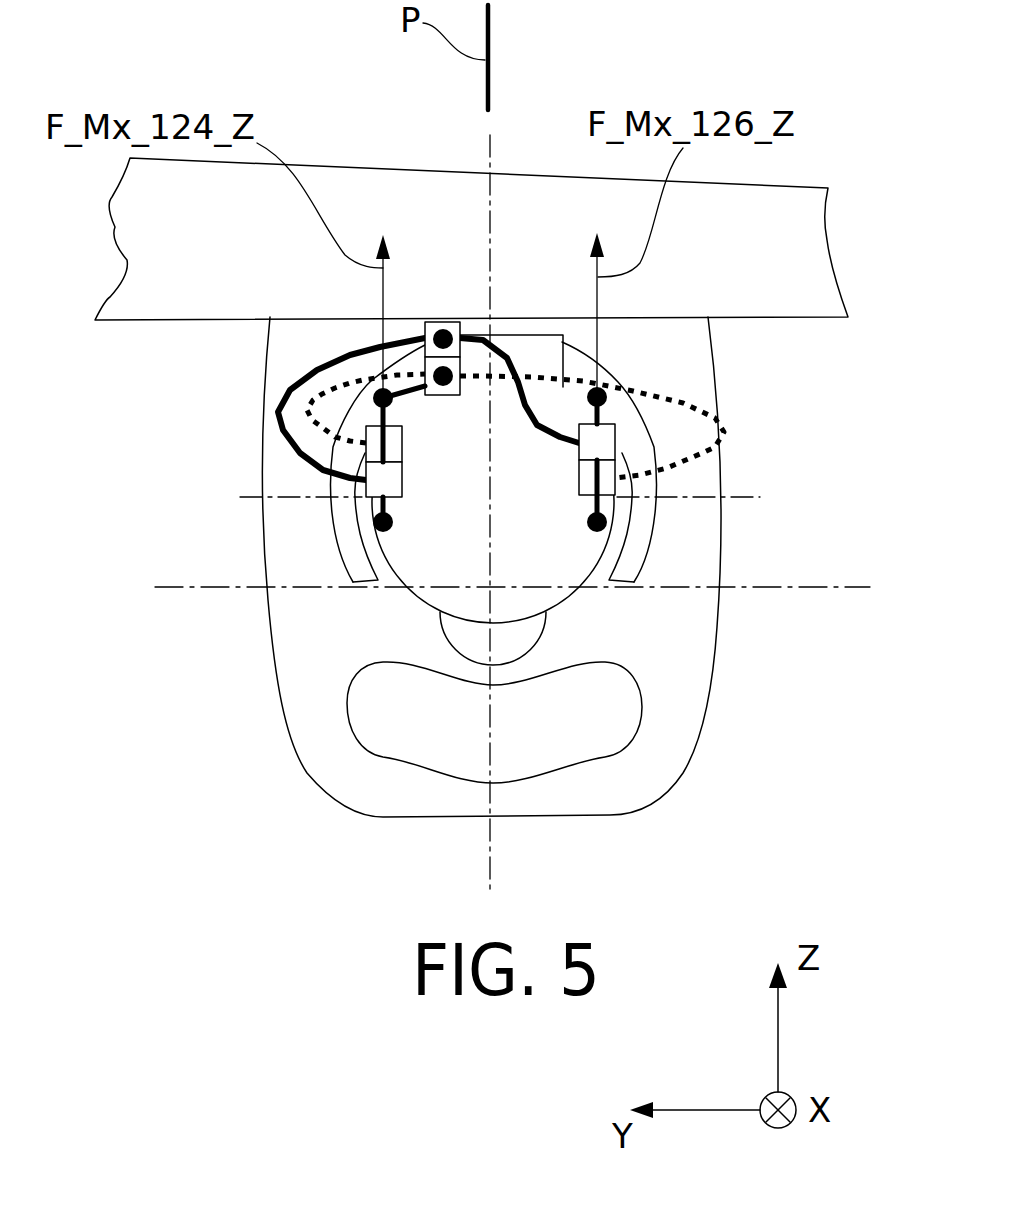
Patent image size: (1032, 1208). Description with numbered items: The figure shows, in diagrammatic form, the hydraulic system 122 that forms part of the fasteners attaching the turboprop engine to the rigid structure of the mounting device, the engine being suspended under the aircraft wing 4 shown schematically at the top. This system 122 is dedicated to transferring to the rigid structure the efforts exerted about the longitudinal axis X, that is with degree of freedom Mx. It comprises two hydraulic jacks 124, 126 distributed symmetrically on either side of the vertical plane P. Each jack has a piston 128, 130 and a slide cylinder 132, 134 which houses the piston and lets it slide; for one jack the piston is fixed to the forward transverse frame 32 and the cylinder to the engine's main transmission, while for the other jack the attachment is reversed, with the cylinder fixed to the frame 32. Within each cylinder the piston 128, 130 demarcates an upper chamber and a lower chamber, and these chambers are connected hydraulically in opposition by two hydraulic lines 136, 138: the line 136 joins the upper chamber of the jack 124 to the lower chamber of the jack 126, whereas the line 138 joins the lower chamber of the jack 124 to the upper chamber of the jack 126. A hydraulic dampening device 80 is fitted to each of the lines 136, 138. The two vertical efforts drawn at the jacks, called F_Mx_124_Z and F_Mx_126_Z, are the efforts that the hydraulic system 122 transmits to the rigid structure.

The wing 4 is at (798, 183).
The hydraulic system 122 is at (440, 294).
The hydraulic dampening device 80 is at (472, 325).
The hydraulic line 136 is at (288, 385).
The hydraulic line 138 is at (312, 420).
The piston 128 is at (403, 405).
The hydraulic jack 124 is at (337, 483).
The hydraulic jack 126 is at (685, 480).
The slide cylinder 132 is at (402, 487).
The slide cylinder 134 is at (580, 452).
The piston 130 is at (615, 494).
The second transverse frame 32 is at (643, 553).